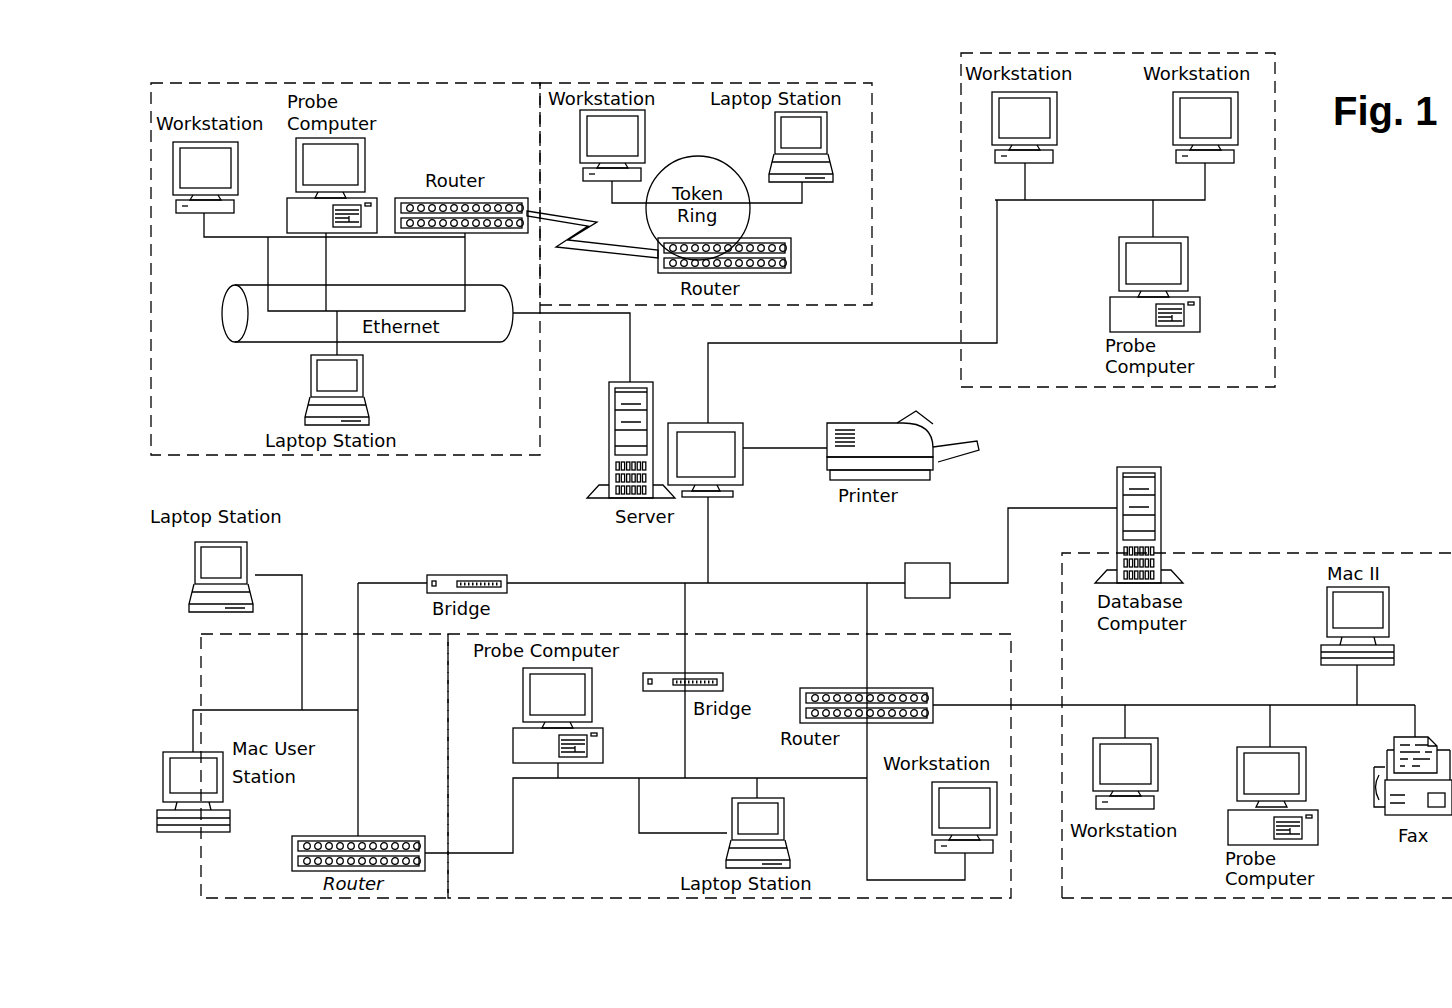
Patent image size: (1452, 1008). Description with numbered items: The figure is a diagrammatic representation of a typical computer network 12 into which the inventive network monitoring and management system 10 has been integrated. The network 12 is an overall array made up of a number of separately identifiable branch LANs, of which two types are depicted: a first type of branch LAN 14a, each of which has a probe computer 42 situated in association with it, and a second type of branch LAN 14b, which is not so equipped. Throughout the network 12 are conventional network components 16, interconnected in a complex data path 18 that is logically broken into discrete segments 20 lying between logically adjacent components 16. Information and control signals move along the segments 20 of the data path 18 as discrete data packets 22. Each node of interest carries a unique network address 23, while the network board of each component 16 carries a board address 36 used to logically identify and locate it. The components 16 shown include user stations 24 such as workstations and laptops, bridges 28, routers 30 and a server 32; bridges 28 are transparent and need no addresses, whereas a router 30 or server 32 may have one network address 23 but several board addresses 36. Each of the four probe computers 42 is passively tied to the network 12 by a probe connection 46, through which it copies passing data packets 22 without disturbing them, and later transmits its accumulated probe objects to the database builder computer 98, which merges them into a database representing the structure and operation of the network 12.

The network monitoring and management system 10 is at (253, 68).
The computer network 12 is at (450, 68).
The first type of branch LAN 14a is at (415, 457).
The second type of branch LAN 14b is at (872, 272).
The network component 16 is at (867, 425).
The data path 18 is at (566, 583).
The segment 20 is at (807, 580).
The data packet 22 is at (928, 563).
The network address 23 is at (322, 836).
The user station 24 is at (200, 215).
The bridge 28 is at (468, 575).
The router 30 is at (897, 688).
The server 32 is at (622, 382).
The board address 36 is at (433, 845).
The probe computer 42 is at (367, 167).
The probe connection 46 is at (1270, 710).
The database builder computer 98 is at (1160, 490).